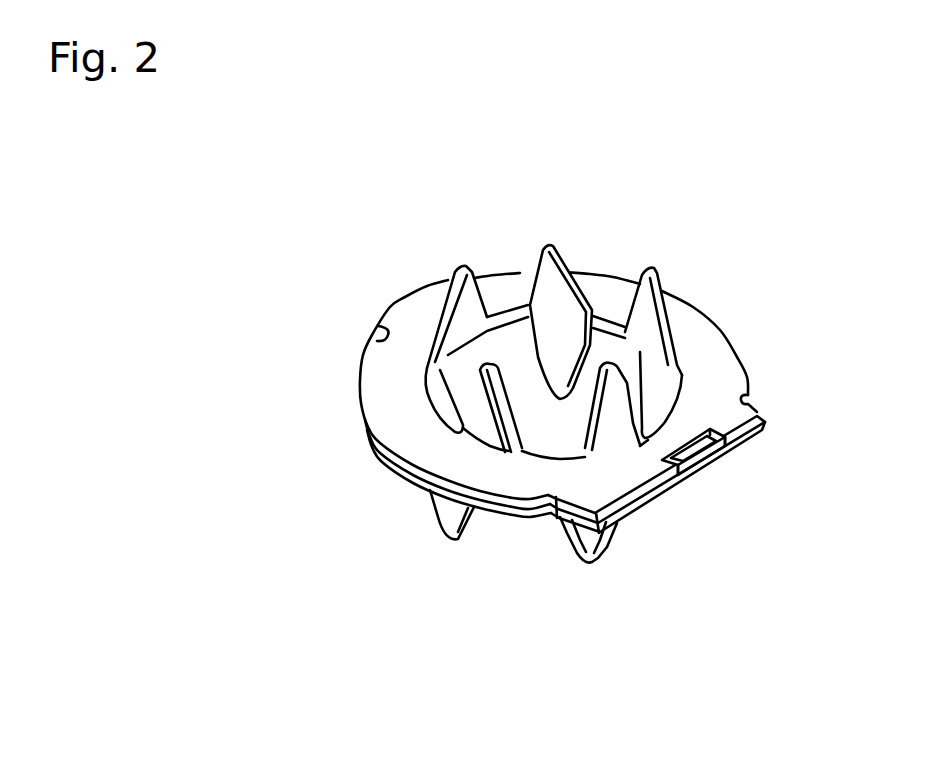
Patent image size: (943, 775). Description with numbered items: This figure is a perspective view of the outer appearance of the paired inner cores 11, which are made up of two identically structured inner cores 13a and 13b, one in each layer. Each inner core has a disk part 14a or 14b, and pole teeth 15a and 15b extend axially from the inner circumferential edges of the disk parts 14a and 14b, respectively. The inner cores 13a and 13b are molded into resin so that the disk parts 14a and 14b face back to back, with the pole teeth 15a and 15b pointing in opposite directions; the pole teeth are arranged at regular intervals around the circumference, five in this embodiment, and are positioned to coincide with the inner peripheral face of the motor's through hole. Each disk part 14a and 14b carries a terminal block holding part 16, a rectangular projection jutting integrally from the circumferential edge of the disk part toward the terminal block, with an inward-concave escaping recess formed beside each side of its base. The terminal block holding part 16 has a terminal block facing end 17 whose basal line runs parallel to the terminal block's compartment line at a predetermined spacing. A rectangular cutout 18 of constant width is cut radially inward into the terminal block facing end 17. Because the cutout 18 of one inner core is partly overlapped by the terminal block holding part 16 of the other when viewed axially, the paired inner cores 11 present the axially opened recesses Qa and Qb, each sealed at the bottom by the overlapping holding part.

The paired inner cores 11 is at (709, 258).
The inner core 13a is at (393, 472).
The inner core 13b is at (393, 425).
The disk part 14a is at (510, 520).
The disk part 14b is at (607, 290).
The pole teeth 15a is at (450, 518).
The pole teeth 15b is at (548, 262).
The terminal block holding part 16 is at (742, 411).
The terminal block facing end 17 is at (650, 493).
The cutout 18 is at (687, 428).
The recess Qa is at (680, 478).
The recess Qb is at (727, 458).